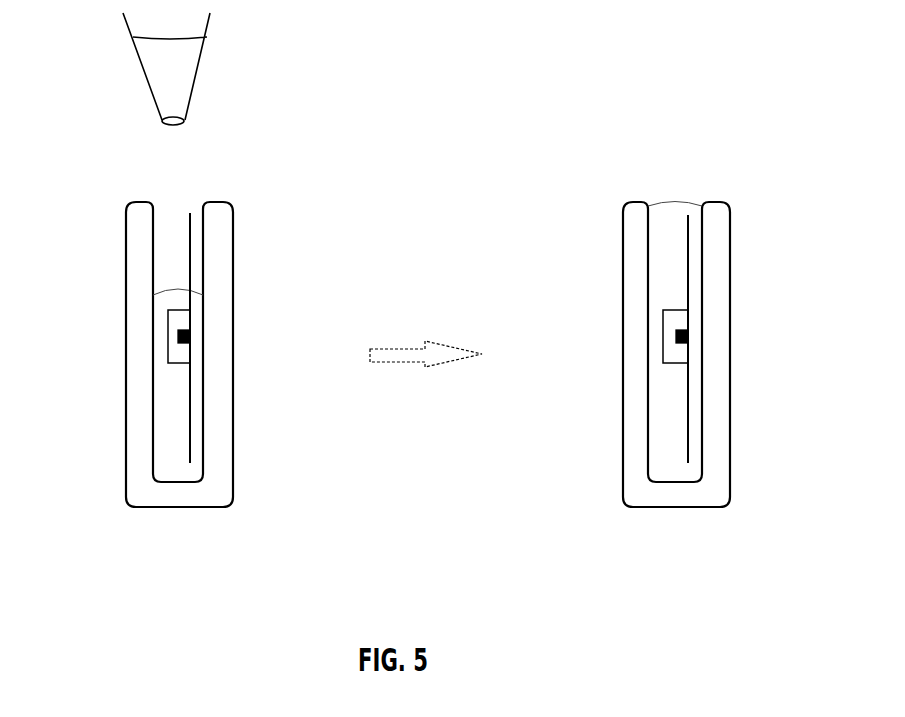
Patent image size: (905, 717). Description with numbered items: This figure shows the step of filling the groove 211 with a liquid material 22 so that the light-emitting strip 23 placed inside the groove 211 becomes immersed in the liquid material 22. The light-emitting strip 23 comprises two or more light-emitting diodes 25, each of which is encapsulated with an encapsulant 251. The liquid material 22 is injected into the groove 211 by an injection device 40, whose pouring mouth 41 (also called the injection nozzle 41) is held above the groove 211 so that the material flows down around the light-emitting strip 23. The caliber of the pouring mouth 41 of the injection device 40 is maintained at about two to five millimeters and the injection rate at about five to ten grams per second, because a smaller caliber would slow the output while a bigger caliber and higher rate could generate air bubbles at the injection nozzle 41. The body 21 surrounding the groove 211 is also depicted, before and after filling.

The container body 21 is at (137, 332).
The groove 211 is at (170, 265).
The liquid material 22 is at (170, 440).
The light-emitting strip 23 is at (190, 252).
The light-emitting diode 25 is at (199, 333).
The encapsulant 251 is at (178, 353).
The injection device 40 is at (180, 76).
The pouring mouth 41 is at (172, 127).